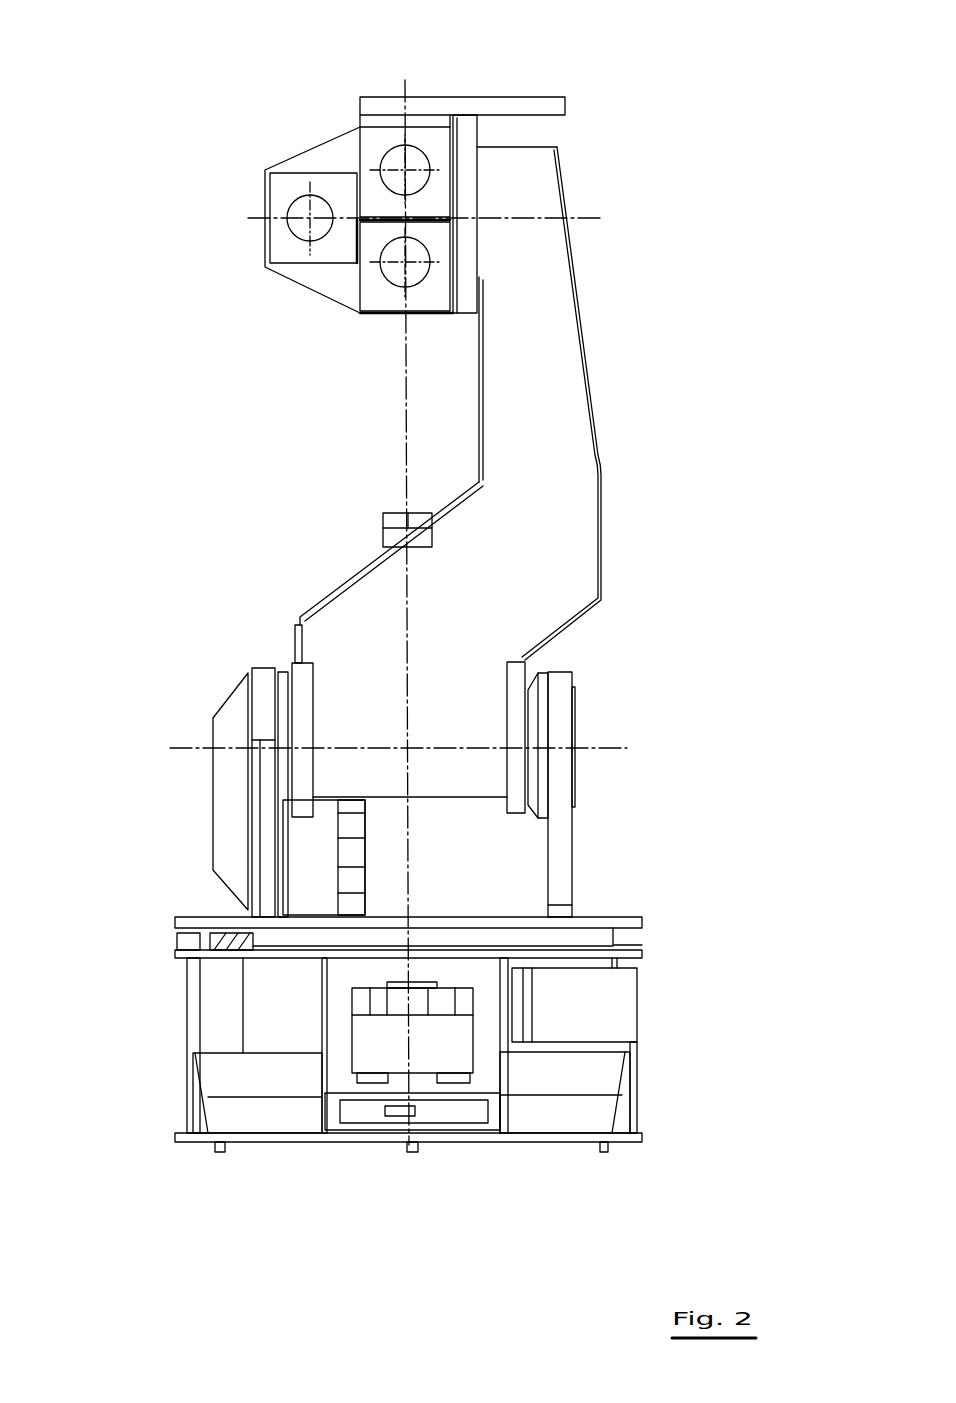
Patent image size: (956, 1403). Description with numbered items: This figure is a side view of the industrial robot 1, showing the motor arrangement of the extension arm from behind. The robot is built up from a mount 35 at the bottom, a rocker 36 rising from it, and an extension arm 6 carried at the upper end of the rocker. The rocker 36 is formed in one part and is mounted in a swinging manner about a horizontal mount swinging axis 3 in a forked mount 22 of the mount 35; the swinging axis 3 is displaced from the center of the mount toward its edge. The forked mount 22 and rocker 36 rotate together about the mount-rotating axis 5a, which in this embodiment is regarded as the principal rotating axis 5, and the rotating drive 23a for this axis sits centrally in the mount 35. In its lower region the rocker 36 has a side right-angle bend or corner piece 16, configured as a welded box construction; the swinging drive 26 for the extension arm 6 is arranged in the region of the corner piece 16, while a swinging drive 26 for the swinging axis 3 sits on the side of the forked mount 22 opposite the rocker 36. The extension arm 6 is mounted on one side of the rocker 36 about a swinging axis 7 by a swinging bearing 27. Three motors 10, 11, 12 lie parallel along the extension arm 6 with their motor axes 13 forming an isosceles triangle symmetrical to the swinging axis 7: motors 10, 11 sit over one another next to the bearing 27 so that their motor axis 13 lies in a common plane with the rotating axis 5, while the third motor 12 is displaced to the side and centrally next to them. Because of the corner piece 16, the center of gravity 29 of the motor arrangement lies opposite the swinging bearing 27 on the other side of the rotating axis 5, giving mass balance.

The industrial robot 1 is at (622, 123).
The mount swinging axis 3 is at (187, 748).
The principal rotating axis 5 is at (416, 1152).
The mount-rotating axis 5a is at (413, 917).
The extension arm 6 is at (335, 282).
The swinging axis 7 is at (598, 215).
The motor 10 is at (385, 97).
The motor 11 is at (382, 297).
The motor 12 is at (283, 190).
The motor axes 13 is at (400, 165).
The corner piece 16 is at (362, 519).
The forked mount 22 is at (555, 703).
The rotating drive 23a is at (438, 1047).
The swinging drive 26 is at (391, 505).
The swinging bearing 27 is at (463, 140).
The center of gravity 29 is at (383, 222).
The mount 35 is at (193, 1008).
The rocker 36 is at (558, 445).